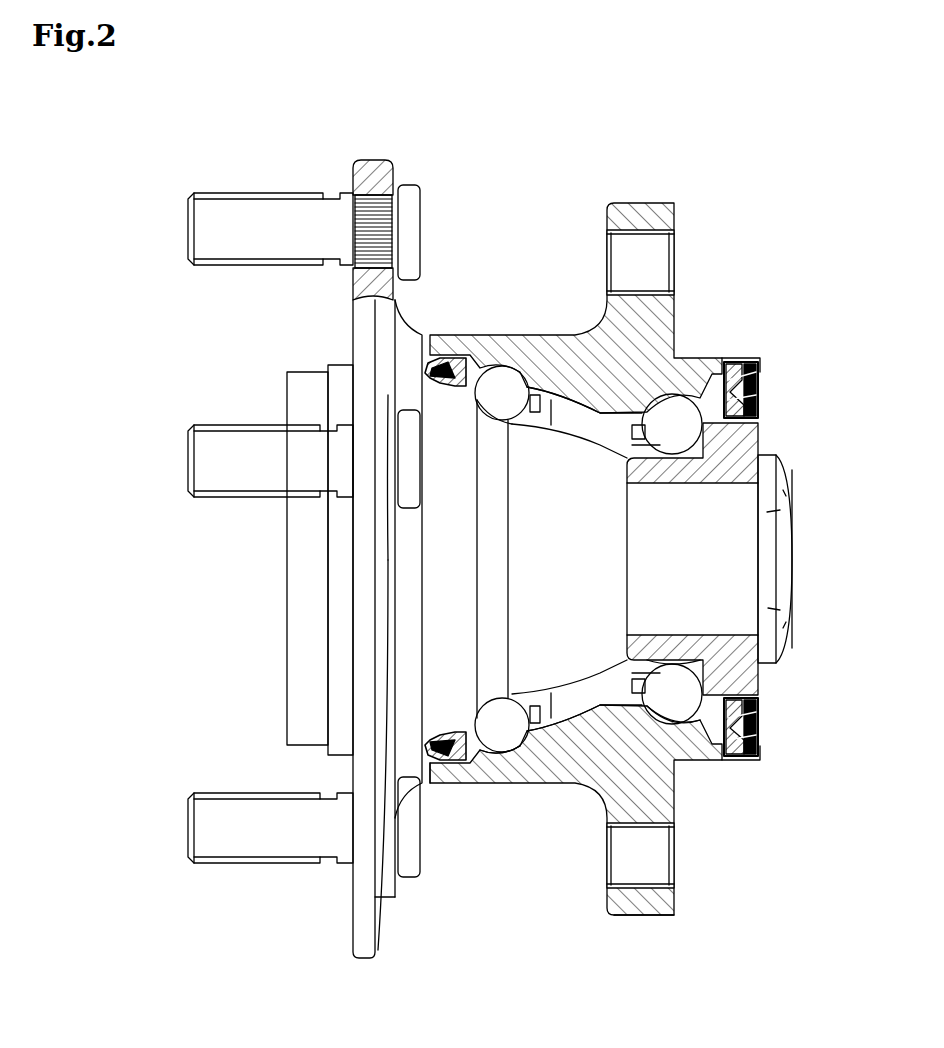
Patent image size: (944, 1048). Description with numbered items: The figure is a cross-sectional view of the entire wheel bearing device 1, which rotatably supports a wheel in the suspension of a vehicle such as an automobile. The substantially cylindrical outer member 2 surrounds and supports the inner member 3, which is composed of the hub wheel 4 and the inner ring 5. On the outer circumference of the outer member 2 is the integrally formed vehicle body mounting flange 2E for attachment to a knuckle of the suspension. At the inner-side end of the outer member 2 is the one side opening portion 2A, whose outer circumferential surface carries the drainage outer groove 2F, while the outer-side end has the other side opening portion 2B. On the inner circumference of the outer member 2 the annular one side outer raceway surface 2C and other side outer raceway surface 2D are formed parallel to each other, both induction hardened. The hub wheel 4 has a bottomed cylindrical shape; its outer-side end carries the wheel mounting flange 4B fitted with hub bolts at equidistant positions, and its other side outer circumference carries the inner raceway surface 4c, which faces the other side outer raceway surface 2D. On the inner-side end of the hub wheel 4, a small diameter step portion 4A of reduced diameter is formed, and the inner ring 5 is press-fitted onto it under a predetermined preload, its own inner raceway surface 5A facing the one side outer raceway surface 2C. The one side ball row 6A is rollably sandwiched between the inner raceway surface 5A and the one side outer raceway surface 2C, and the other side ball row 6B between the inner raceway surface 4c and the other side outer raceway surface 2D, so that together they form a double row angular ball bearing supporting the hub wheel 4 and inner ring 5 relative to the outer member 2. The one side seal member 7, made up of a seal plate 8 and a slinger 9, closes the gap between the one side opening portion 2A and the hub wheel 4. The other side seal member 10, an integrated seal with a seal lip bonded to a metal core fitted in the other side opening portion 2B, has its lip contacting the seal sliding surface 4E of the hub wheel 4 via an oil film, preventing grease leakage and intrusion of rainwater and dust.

The wheel bearing device 1 is at (80, 107).
The outer member 2 is at (675, 167).
The one side opening portion 2A is at (728, 752).
The other side opening portion 2B is at (445, 768).
The one side outer raceway surface 2C is at (665, 724).
The other side outer raceway surface 2D is at (512, 747).
The vehicle body mounting flange 2E is at (653, 915).
The drainage outer groove 2F is at (740, 360).
The inner member 3 is at (819, 490).
The hub wheel 4 is at (288, 590).
The small diameter step portion 4A is at (753, 577).
The wheel mounting flange 4B is at (366, 957).
The inner raceway surface 4c is at (488, 410).
The seal sliding surface 4E is at (438, 740).
The inner ring 5 is at (760, 680).
The inner raceway surface 5A is at (668, 680).
The one side ball row 6A is at (676, 420).
The other side ball row 6B is at (502, 385).
The one side seal member 7 is at (779, 364).
The seal plate 8 is at (738, 368).
The slinger 9 is at (760, 406).
The other side seal member 10 is at (432, 358).